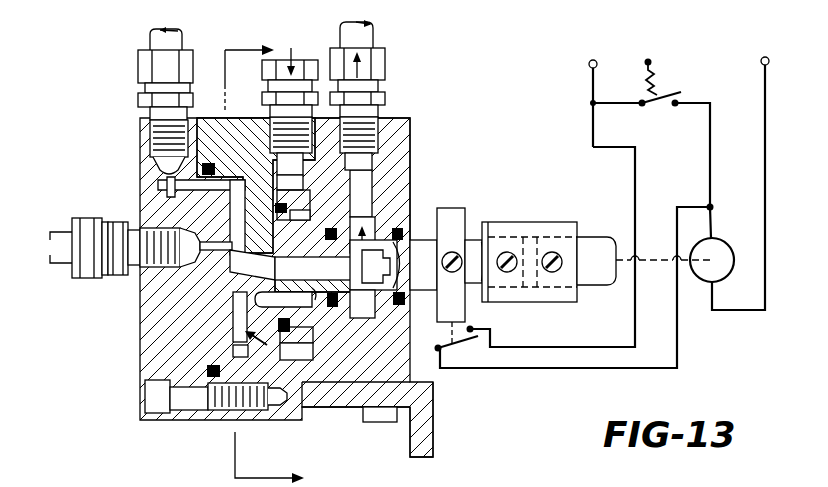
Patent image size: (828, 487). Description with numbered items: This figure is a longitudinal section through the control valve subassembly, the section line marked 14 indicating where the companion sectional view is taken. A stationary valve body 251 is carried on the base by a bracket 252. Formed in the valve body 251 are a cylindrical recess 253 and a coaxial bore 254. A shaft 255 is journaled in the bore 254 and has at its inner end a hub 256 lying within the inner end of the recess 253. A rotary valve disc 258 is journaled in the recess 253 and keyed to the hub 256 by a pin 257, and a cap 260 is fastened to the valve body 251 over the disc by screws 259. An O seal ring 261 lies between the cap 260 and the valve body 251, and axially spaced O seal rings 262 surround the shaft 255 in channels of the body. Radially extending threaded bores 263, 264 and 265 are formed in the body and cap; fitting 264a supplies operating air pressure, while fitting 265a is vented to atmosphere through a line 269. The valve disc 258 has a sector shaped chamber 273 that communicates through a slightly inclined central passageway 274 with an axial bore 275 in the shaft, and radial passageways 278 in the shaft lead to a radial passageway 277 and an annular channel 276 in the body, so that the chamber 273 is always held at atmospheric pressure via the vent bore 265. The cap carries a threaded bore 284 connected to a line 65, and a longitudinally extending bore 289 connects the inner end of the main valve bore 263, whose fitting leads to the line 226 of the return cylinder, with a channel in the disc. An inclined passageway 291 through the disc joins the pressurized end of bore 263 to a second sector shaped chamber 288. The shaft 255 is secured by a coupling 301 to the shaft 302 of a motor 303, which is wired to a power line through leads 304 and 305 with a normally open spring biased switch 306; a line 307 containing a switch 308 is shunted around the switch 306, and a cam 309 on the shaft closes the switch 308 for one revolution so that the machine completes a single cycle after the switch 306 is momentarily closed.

The line 226 is at (152, 42).
The threaded bore 263 is at (150, 135).
The longitudinally extending bore 289 is at (190, 188).
The line 65 is at (52, 262).
The threaded bore 284 is at (155, 272).
The cap 260 is at (152, 340).
The screws 259 is at (145, 402).
The O seal ring 261 is at (207, 368).
The sector shaped chamber 273 is at (230, 210).
The central passageway 274 is at (240, 262).
The rotary valve disc 258 is at (255, 295).
The sector shaped chamber 288 is at (233, 305).
The inclined passageway 291 is at (308, 358).
The cylindrical recess 253 is at (315, 385).
The hub 256 is at (286, 255).
The radial passageways 278 is at (362, 268).
The pin 257 is at (318, 303).
The annular channel 276 is at (366, 316).
The O seal rings 262 is at (334, 306).
The axial bore 275 is at (322, 200).
The fitting 264a is at (262, 86).
The threaded bore 264 is at (296, 136).
The line 269 is at (374, 32).
The fitting 265a is at (386, 64).
The threaded bore 265 is at (380, 128).
The valve body 251 is at (412, 140).
The radial passageway 277 is at (368, 182).
The coaxial bore 254 is at (418, 238).
The cam 309 is at (456, 208).
The shaft 255 is at (472, 240).
The coupling 301 is at (542, 222).
The shaft 302 is at (598, 237).
The motor 303 is at (722, 240).
The lead 304 is at (590, 90).
The switch 306 is at (662, 108).
The lead 305 is at (765, 150).
The line 307 is at (635, 172).
The switch 308 is at (456, 352).
The bracket 252 is at (430, 442).
The section line 14- 14 is at (264, 255).